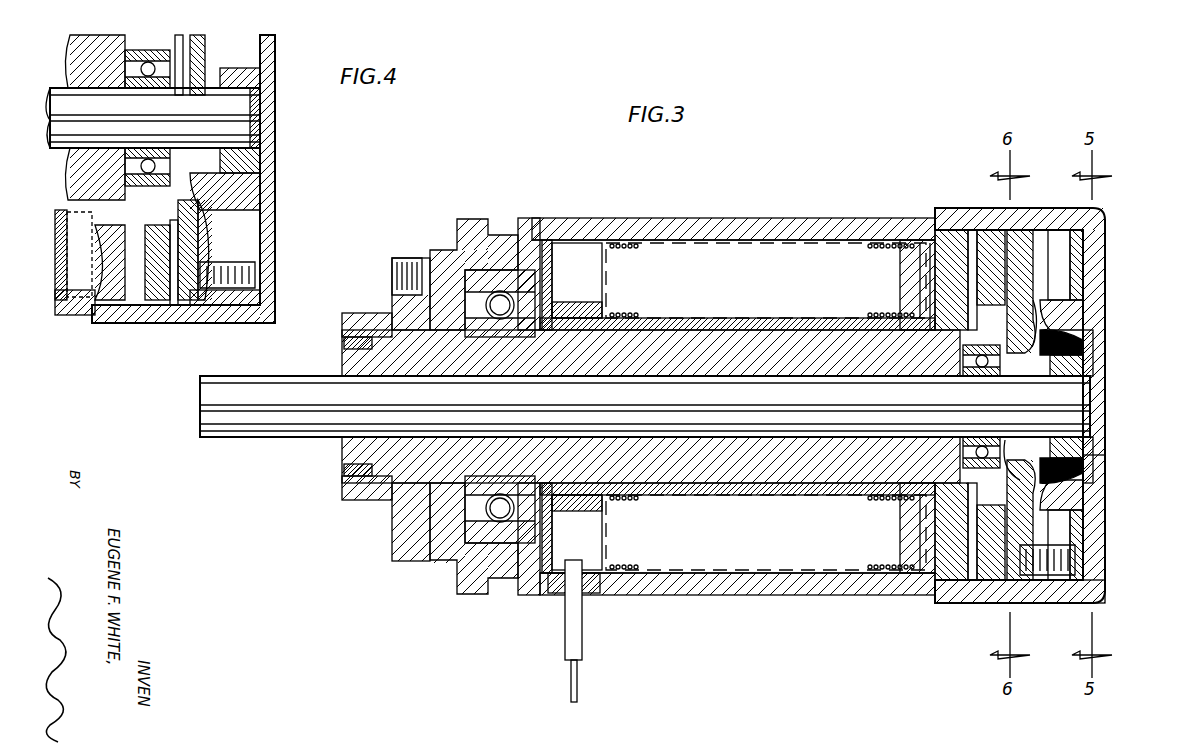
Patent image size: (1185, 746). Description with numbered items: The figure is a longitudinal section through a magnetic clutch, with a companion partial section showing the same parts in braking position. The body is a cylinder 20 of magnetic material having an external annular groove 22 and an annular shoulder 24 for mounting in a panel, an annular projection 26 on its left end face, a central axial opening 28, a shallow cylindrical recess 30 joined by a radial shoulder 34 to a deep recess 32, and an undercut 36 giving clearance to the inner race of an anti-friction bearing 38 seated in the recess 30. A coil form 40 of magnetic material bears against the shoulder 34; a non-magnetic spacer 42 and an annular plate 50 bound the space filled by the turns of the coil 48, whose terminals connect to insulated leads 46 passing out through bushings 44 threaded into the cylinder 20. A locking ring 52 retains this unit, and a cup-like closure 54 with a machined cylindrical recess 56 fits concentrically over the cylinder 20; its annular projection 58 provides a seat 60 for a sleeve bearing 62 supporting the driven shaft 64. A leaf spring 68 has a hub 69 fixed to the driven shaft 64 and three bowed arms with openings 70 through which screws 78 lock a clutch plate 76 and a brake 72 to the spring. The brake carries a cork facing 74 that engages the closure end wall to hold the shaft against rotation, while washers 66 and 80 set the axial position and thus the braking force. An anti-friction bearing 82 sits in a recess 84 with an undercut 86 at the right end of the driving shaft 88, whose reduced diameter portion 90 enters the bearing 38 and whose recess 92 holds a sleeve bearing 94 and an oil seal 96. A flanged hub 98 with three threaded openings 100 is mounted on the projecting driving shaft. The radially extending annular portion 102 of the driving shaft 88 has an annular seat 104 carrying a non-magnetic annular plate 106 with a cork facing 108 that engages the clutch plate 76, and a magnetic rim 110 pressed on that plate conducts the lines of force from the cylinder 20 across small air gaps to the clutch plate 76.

In FIG. 3, the cylinder 20 is at (752, 218).
In FIG. 4, the cylinder 20 is at (85, 316).
In FIG. 3, the external annular groove 22 is at (530, 218).
In FIG. 3, the annular shoulder 24 is at (446, 250).
In FIG. 3, the annular projection 26 is at (424, 258).
In FIG. 3, the axial opening 28 is at (470, 510).
In FIG. 3, the shallow cylindrical recess 30 is at (478, 270).
In FIG. 3, the deep cylindrical recess 32 is at (785, 243).
In FIG. 3, the shoulder 34 is at (535, 245).
In FIG. 3, the undercut 36 is at (445, 560).
In FIG. 3, the anti-friction bearing 38 is at (525, 570).
In FIG. 3, the coil form 40 is at (675, 322).
In FIG. 4, the coil form 40 is at (68, 222).
In FIG. 3, the spacer 42 is at (600, 243).
In FIG. 3, the bushings 44 is at (560, 610).
In FIG. 3, the insulated leads 46 is at (584, 668).
In FIG. 3, the coil 48 is at (634, 313).
In FIG. 4, the coil 48 is at (62, 270).
In FIG. 3, the annular plate 50 is at (925, 260).
In FIG. 4, the annular plate 50 is at (105, 305).
In FIG. 3, the locking ring 52 is at (988, 230).
In FIG. 4, the locking ring 52 is at (150, 305).
In FIG. 3, the cup-like closure 54 is at (1098, 215).
In FIG. 4, the cup-like closure 54 is at (275, 221).
In FIG. 3, the cylindrical recess 56 is at (950, 230).
In FIG. 3, the annular projection 58 is at (1090, 462).
In FIG. 3, the seat 60 is at (1085, 348).
In FIG. 3, the sleeve bearing 62 is at (1085, 365).
In FIG. 4, the sleeve bearing 62 is at (262, 160).
In FIG. 3, the driven shaft 64 is at (645, 406).
In FIG. 4, the driven shaft 64 is at (153, 118).
In FIG. 3, the washer 66 is at (1090, 448).
In FIG. 4, the washer 66 is at (262, 72).
In FIG. 3, the leaf spring 68 is at (1070, 312).
In FIG. 4, the leaf spring 68 is at (250, 195).
In FIG. 4, the hub 69 is at (198, 85).
In FIG. 3, the openings 70 is at (1035, 580).
In FIG. 4, the openings 70 is at (210, 290).
In FIG. 3, the brake 72 is at (1090, 240).
In FIG. 3, the non-metallic facing 74 is at (1085, 265).
In FIG. 3, the clutch plate 76 is at (1035, 262).
In FIG. 4, the clutch plate 76 is at (210, 250).
In FIG. 3, the screws 78 is at (1100, 600).
In FIG. 4, the screws 78 is at (260, 298).
In FIG. 3, the washer 80 is at (1090, 340).
In FIG. 4, the washer 80 is at (262, 108).
In FIG. 3, the anti-friction bearing 82 is at (970, 376).
In FIG. 4, the anti-friction bearing 82 is at (135, 62).
In FIG. 3, the recess 84 is at (920, 290).
In FIG. 3, the undercut 86 is at (950, 350).
In FIG. 3, the driving shaft 88 is at (772, 345).
In FIG. 4, the driving shaft 88 is at (85, 160).
In FIG. 3, the reduced diameter portion 90 is at (514, 378).
In FIG. 3, the cylindrical recess 92 is at (376, 330).
In FIG. 3, the sleeve bearing 94 is at (345, 470).
In FIG. 3, the oil seal 96 is at (345, 345).
In FIG. 3, the flanged hub 98 is at (368, 500).
In FIG. 3, the openings 100 is at (404, 258).
In FIG. 3, the radially extending annular portion 102 is at (840, 600).
In FIG. 3, the annular seat 104 is at (1015, 485).
In FIG. 3, the annular plate 106 is at (1018, 290).
In FIG. 3, the non-metallic facing 108 is at (1020, 250).
In FIG. 4, the non-metallic facing 108 is at (182, 305).
In FIG. 3, the rim 110 is at (975, 232).
In FIG. 4, the rim 110 is at (172, 308).